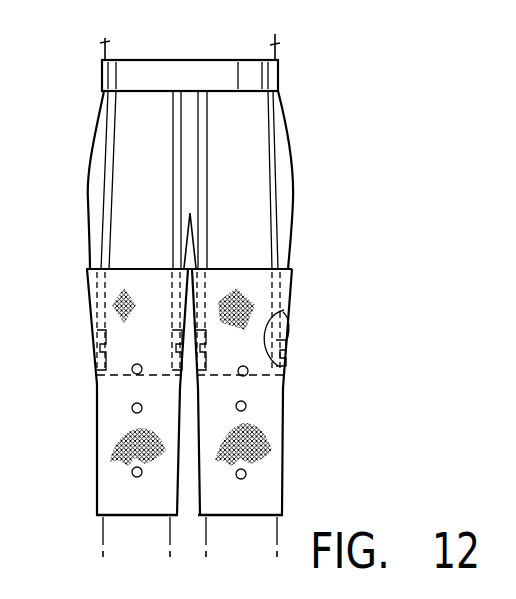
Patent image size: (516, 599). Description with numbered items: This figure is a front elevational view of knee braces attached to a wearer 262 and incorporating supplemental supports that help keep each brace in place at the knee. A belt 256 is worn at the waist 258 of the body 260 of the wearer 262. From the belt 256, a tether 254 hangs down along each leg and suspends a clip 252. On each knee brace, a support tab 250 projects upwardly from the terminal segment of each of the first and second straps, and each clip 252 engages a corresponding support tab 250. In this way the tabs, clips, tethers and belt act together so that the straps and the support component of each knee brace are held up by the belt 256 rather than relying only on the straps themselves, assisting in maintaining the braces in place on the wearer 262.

The support tab 250 is at (97, 360).
The clip 252 is at (287, 335).
The tether 254 is at (276, 215).
The belt 256 is at (283, 71).
The waist 258 is at (277, 45).
The body 260 is at (293, 153).
The wearer 262 is at (105, 48).